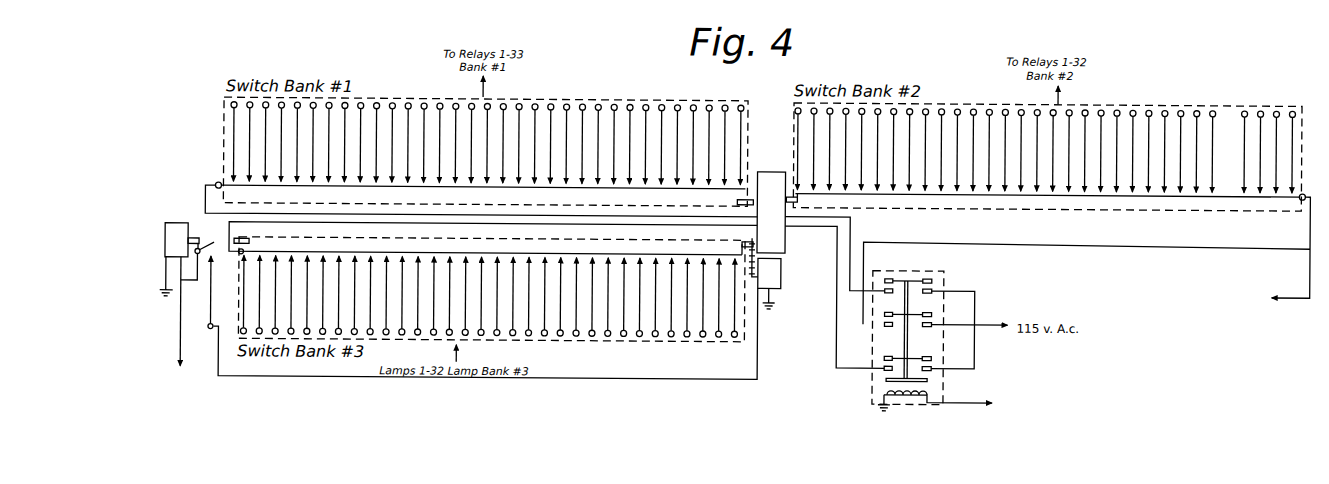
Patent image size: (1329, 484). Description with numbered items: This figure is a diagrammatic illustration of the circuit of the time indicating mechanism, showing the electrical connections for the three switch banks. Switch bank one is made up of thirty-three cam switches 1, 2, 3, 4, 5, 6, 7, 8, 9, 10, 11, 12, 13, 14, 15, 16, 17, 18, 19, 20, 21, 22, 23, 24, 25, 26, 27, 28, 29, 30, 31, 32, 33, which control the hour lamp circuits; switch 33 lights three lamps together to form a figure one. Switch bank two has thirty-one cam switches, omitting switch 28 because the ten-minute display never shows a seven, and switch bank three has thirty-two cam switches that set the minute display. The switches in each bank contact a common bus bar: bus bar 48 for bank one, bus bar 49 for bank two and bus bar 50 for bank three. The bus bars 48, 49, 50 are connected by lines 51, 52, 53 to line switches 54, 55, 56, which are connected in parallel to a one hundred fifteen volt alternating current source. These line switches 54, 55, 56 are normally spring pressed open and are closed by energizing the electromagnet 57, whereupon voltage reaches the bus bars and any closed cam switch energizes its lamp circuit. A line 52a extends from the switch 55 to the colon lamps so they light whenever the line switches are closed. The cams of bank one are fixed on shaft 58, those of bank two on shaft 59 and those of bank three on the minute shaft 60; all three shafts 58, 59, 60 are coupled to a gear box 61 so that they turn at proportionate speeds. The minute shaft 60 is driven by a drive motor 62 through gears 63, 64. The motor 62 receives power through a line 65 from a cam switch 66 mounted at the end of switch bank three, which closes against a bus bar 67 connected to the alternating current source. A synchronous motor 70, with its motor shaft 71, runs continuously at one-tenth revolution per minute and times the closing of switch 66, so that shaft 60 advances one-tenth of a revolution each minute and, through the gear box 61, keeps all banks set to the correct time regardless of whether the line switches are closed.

The cam switch 1 is at (226, 149).
The cam switch 2 is at (248, 140).
The cam switch 3 is at (264, 160).
The cam switch 4 is at (280, 140).
The cam switch 5 is at (296, 160).
The cam switch 6 is at (312, 140).
The cam switch 7 is at (328, 160).
The cam switch 8 is at (343, 140).
The cam switch 9 is at (359, 160).
The cam switch 10 is at (375, 140).
The cam switch 11 is at (391, 160).
The cam switch 12 is at (407, 140).
The cam switch 13 is at (423, 160).
The cam switch 14 is at (438, 140).
The cam switch 15 is at (454, 160).
The cam switch 16 is at (470, 140).
The cam switch 17 is at (486, 160).
The cam switch 18 is at (502, 140).
The cam switch 19 is at (518, 160).
The cam switch 20 is at (534, 140).
The cam switch 21 is at (549, 160).
The cam switch 22 is at (565, 140).
The cam switch 23 is at (581, 160).
The cam switch 24 is at (597, 140).
The cam switch 25 is at (613, 160).
The cam switch 26 is at (628, 140).
The cam switch 27 is at (644, 160).
The cam switch 28 is at (660, 140).
The cam switch 29 is at (676, 160).
The cam switch 30 is at (692, 140).
The cam switch 31 is at (708, 160).
The cam switch 32 is at (724, 140).
The cam switch 33 is at (739, 160).
The bus bar 48 is at (454, 186).
The bus bar 49 is at (996, 195).
The bus bar 50 is at (439, 249).
The line 51 is at (205, 195).
The line 52 is at (1214, 241).
The line 52a is at (1309, 277).
The line 53 is at (837, 307).
The line switch 54 is at (942, 274).
The line switch 55 is at (935, 310).
The line switch 56 is at (933, 353).
The electromagnet 57 is at (881, 391).
The shaft 58 is at (736, 197).
The shaft 59 is at (797, 195).
The minute shaft 60 is at (741, 243).
The gear box 61 is at (781, 198).
The drive motor 62 is at (779, 280).
The gear 63 is at (752, 263).
The gear 64 is at (781, 242).
The line 65 is at (648, 376).
The cam switch 66 is at (211, 303).
The bus bar 67 is at (220, 243).
The synchronous motor 70 is at (184, 248).
The motor shaft 71 is at (196, 238).